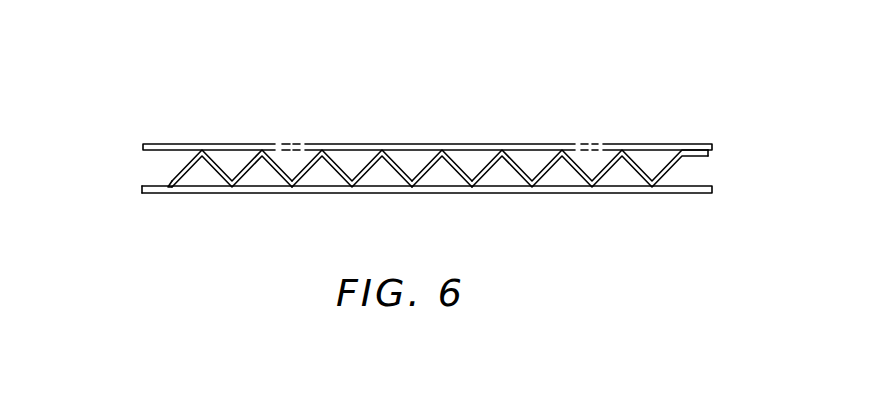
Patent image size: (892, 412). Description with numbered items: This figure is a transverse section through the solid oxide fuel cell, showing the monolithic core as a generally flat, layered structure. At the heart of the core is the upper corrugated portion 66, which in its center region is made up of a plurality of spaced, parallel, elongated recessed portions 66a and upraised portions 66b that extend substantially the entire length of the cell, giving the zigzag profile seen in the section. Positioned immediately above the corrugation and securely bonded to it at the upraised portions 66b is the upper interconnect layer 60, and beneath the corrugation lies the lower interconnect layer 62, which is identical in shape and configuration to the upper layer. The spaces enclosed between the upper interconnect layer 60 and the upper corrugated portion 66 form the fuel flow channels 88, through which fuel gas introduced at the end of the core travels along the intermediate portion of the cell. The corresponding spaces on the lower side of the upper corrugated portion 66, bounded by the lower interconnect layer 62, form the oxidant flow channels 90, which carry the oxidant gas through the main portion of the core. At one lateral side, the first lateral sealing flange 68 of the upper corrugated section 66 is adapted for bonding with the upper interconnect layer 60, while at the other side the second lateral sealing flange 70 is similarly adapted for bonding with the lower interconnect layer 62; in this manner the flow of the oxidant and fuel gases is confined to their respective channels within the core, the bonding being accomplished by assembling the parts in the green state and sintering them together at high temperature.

The upper interconnect layer 60 is at (427, 162).
The lower interconnect layer 62 is at (190, 195).
The upper corrugated portion 66 is at (395, 156).
The recessed portions 66a is at (472, 182).
The upraised portions 66b is at (274, 148).
The first lateral sealing flange 68 is at (697, 155).
The second lateral sealing flange 70 is at (153, 184).
The fuel flow channel 88 is at (402, 160).
The oxidant flow channel 90 is at (320, 177).